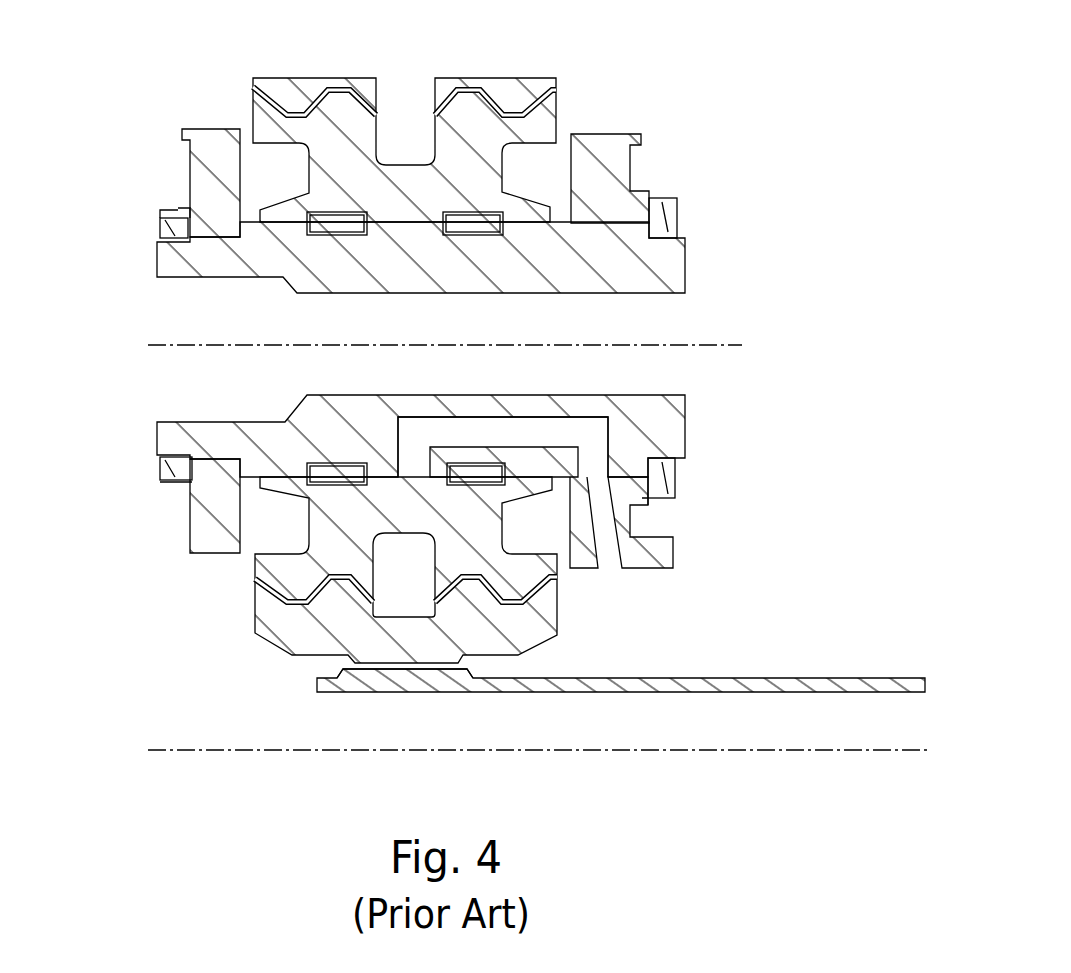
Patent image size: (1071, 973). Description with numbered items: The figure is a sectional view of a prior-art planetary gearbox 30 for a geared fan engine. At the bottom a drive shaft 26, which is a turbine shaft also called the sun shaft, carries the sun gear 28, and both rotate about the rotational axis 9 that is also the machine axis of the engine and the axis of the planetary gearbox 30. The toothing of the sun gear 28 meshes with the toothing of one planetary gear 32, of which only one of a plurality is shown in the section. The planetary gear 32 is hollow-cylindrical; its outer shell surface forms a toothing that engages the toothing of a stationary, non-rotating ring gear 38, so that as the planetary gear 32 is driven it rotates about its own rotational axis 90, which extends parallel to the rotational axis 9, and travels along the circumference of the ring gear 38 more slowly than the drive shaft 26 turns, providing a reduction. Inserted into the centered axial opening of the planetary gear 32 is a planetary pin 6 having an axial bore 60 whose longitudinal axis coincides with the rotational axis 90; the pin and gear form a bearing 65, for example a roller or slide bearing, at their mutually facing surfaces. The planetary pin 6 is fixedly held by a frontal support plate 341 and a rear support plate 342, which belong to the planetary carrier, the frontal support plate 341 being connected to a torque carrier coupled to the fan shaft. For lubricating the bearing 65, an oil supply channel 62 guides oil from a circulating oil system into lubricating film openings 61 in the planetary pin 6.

The planetary pin 6 is at (660, 267).
The rotational axis 9 is at (360, 752).
The drive shaft 26 is at (595, 690).
The sun gear 28 is at (522, 638).
The planetary gearbox 30 is at (401, 335).
The planetary gear 32 is at (558, 103).
The ring gear 38 is at (510, 95).
The axial bore 60 is at (669, 326).
The lubricating film openings 61 is at (503, 433).
The oil supply channel 62 is at (607, 547).
The bearing 65 is at (408, 223).
The rotational axis 90 is at (718, 346).
The frontal support plate 341 is at (190, 163).
The rear support plate 342 is at (615, 173).